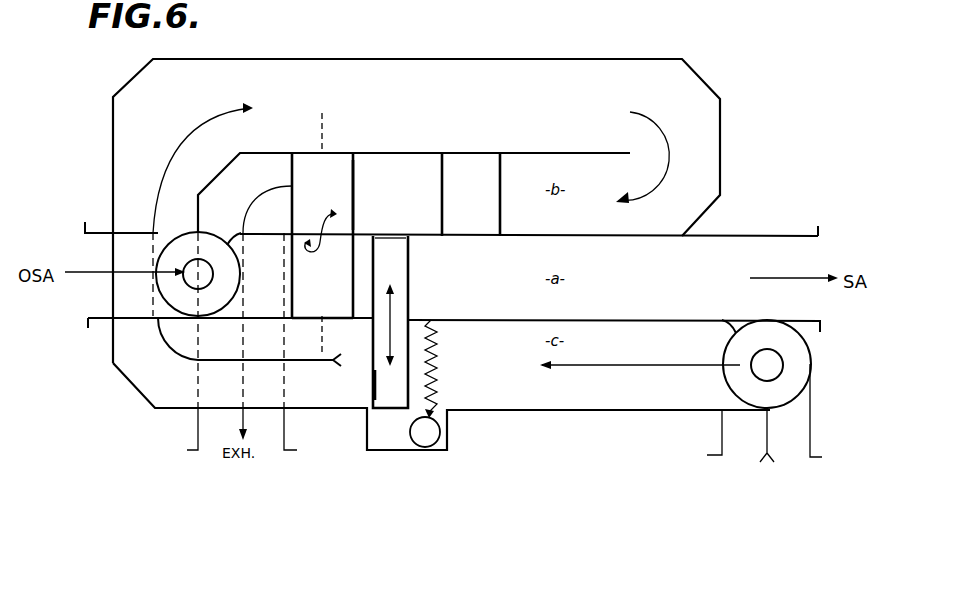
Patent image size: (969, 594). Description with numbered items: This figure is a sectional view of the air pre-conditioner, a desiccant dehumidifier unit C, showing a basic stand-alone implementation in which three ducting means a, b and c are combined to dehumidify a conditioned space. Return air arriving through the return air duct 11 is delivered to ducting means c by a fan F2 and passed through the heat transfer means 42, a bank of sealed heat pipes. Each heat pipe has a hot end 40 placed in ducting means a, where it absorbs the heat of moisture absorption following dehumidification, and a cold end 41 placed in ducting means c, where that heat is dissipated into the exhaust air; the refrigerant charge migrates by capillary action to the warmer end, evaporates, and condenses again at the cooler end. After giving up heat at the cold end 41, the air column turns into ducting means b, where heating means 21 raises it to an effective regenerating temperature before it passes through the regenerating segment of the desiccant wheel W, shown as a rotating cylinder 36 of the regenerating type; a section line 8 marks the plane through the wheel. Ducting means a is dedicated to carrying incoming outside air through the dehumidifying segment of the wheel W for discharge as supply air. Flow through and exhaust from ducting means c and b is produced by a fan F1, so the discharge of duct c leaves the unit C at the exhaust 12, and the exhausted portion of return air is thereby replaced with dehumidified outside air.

The section line 8- 8 is at (293, 127).
The return air duct 11 is at (740, 430).
The exhaust air discharge 12 is at (217, 421).
The heating means 21 is at (478, 160).
The rotating cylinder 36 is at (338, 152).
The hot end 40 is at (390, 242).
The cold end 41 is at (375, 384).
The heat transfer means 42 is at (415, 270).
The dehumidifier unit C is at (477, 54).
The desiccant wheel W is at (366, 180).
The fan F1 is at (156, 259).
The fan F2 is at (806, 357).